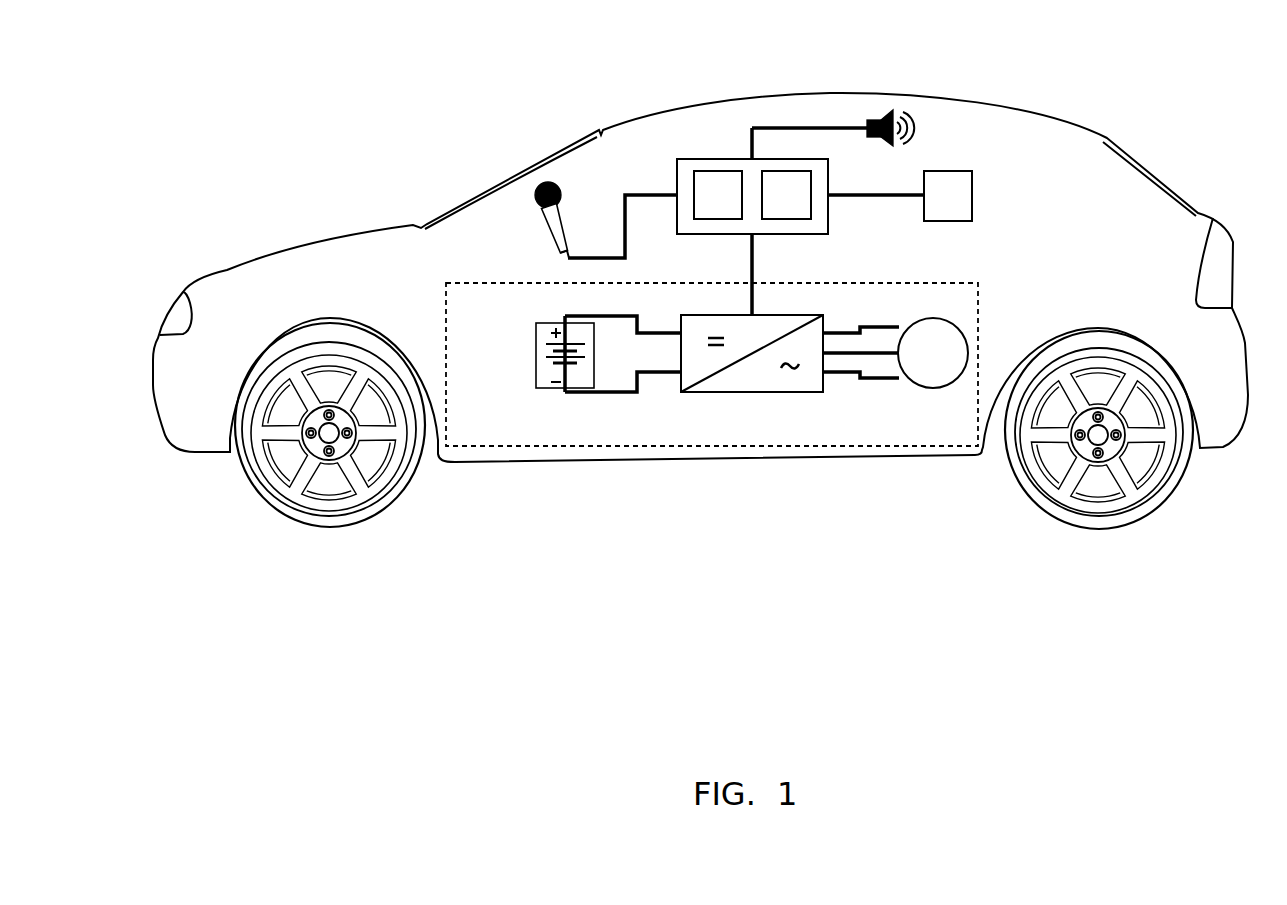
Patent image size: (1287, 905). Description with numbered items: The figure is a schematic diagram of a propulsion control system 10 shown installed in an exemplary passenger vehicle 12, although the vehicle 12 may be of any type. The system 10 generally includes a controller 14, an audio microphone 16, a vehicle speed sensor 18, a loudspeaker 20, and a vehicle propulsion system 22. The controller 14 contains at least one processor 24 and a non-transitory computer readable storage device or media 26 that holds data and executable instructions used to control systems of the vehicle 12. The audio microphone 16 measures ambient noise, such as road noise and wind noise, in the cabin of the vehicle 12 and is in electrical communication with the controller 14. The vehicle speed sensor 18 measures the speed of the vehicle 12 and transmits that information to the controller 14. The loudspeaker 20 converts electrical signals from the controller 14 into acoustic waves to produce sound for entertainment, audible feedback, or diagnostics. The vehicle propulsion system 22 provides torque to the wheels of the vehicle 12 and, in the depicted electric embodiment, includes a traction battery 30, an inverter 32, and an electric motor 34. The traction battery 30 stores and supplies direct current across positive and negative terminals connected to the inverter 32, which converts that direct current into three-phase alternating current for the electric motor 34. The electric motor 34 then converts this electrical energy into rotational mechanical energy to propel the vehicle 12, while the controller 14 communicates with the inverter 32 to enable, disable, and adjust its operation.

The propulsion control system 10 is at (700, 296).
The vehicle 12 is at (1023, 108).
The controller 14 is at (746, 221).
The audio microphone 16 is at (554, 237).
The vehicle speed sensor 18 is at (961, 207).
The loudspeaker 20 is at (870, 140).
The vehicle propulsion system 22 is at (978, 326).
The processor 24 is at (731, 206).
The non-transitory computer readable storage device or media 26 is at (799, 206).
The traction battery 30 is at (536, 356).
The inverter 32 is at (745, 392).
The electric motor 34 is at (935, 388).